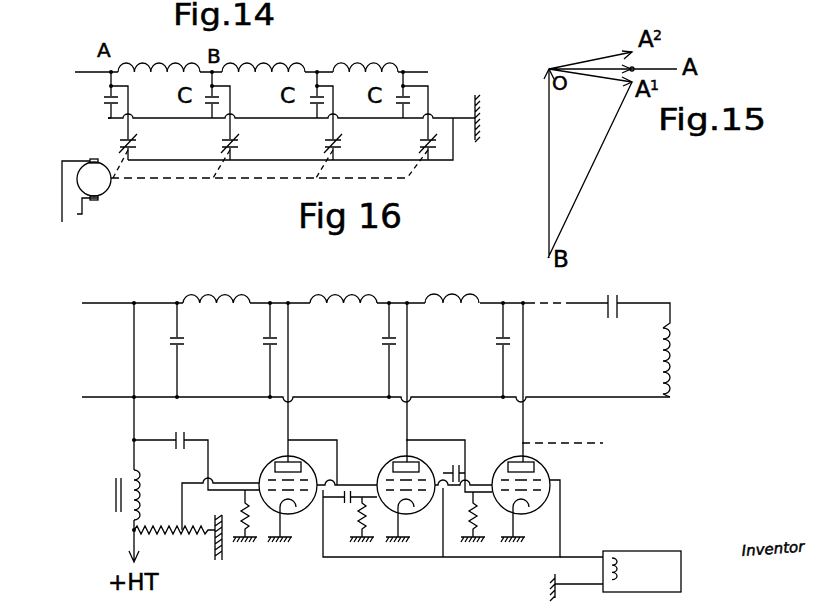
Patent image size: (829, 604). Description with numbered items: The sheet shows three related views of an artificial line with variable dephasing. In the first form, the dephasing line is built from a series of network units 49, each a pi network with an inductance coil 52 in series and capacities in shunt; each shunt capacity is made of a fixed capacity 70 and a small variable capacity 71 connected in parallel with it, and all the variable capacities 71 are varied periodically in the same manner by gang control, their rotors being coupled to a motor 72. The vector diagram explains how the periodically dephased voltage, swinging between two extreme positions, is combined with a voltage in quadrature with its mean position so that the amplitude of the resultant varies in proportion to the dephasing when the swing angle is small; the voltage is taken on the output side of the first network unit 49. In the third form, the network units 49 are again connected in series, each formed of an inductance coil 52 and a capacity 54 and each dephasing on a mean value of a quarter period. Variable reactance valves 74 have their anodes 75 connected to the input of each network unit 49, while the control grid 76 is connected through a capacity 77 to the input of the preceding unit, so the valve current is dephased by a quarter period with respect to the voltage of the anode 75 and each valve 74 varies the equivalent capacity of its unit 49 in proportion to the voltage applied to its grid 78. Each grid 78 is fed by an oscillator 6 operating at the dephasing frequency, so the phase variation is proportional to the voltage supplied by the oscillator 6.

In FIG. 14, the inductance coil 52 is at (158, 66).
In FIG. 16, the inductance coil 52 is at (192, 297).
In FIG. 14, the fixed capacity 70 is at (108, 110).
In FIG. 14, the variable capacity 71 is at (457, 143).
In FIG. 14, the network unit 49 is at (290, 139).
In FIG. 16, the network unit 49 is at (355, 350).
In FIG. 14, the motor 72 is at (103, 186).
In FIG. 16, the capacity 54 is at (326, 350).
In FIG. 16, the capacity 77 is at (176, 449).
In FIG. 16, the variable reactance valve 74 is at (271, 471).
In FIG. 16, the anode 75 is at (296, 470).
In FIG. 16, the control grid 76 is at (371, 516).
In FIG. 16, the grid 78 is at (569, 482).
In FIG. 16, the oscillator 6 is at (658, 551).